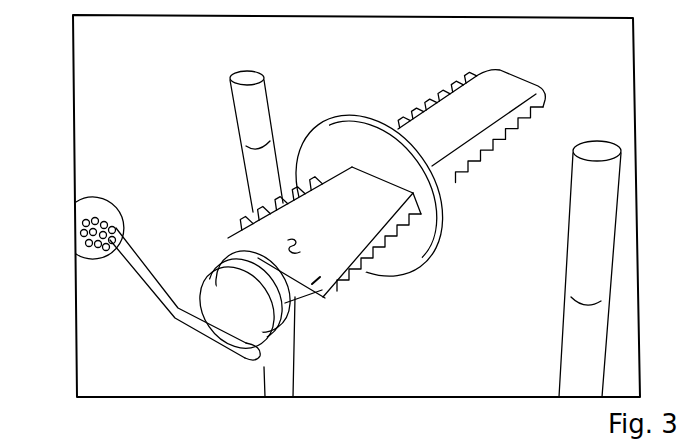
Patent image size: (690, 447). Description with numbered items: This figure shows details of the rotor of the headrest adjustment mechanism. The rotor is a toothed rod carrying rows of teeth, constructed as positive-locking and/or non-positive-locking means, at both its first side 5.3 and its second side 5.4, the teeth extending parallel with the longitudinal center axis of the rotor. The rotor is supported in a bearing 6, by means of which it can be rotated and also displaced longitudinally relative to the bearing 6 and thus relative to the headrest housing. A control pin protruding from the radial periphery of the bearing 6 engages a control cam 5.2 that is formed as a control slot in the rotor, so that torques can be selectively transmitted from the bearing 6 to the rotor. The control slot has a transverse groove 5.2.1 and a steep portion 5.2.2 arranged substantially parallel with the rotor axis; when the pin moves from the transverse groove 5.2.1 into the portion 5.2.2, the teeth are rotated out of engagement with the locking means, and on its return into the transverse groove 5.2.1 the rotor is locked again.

The control cam 5.2 is at (318, 241).
The transverse groove 5.2.1 is at (287, 248).
The portion of the control cam 5.2.2 is at (322, 277).
The first side of the rotor 5.3 is at (418, 94).
The second side of the rotor 5.4 is at (501, 165).
The bearing 6 is at (213, 298).